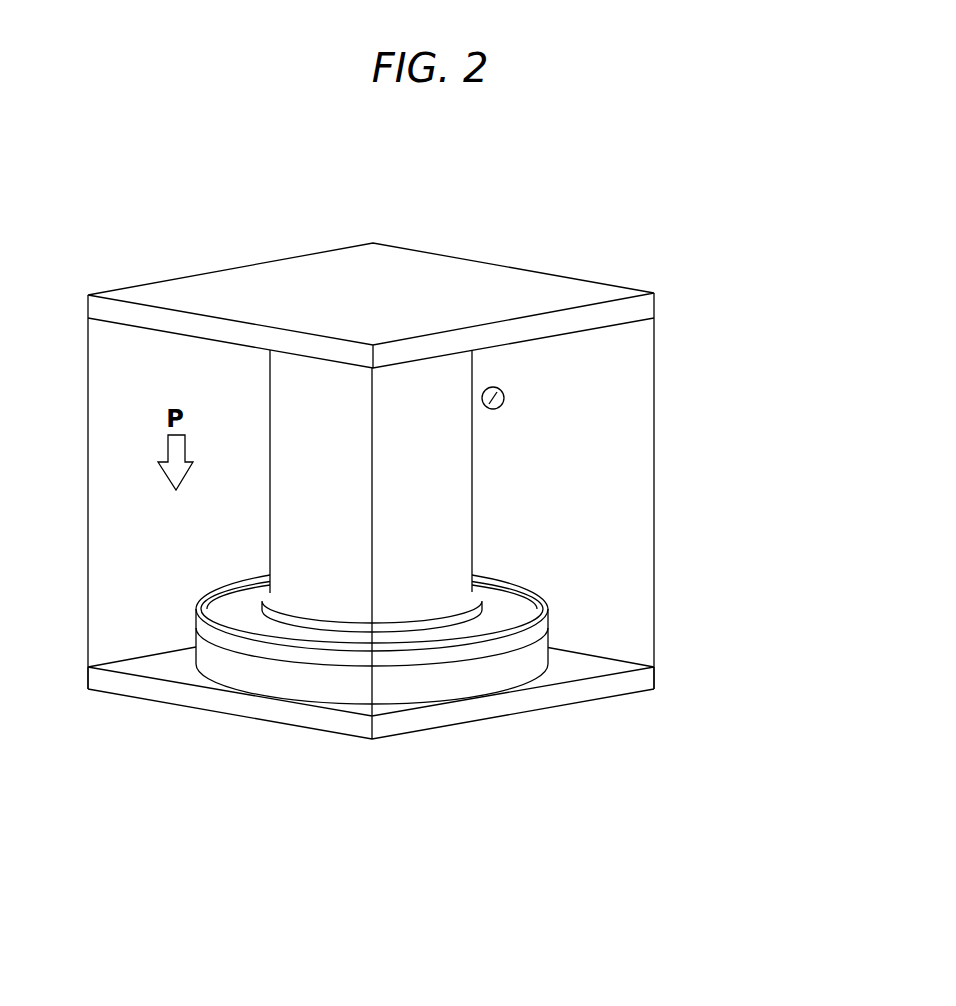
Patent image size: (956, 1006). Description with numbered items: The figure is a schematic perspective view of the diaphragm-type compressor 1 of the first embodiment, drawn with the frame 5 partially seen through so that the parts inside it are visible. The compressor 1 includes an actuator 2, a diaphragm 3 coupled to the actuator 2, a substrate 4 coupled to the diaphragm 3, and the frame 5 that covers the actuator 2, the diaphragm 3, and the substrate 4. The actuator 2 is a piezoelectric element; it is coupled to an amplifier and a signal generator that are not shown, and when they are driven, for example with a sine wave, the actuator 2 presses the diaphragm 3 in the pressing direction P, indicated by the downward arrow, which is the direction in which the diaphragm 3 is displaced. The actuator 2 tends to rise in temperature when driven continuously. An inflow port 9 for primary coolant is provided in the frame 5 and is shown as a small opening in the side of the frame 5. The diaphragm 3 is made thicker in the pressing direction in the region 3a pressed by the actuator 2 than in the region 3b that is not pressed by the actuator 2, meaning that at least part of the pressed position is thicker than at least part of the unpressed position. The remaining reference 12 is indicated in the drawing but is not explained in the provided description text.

The diaphragm-type compressor 1 is at (722, 203).
The actuator 2 is at (428, 398).
The diaphragm 3 is at (457, 694).
The region pressed by the actuator 3a is at (318, 628).
The region not pressed by the actuator 3b is at (491, 621).
The substrate 4 is at (530, 657).
The frame 5 is at (203, 290).
The inflow port 9 is at (489, 409).
The accommodating space 12 is at (498, 465).